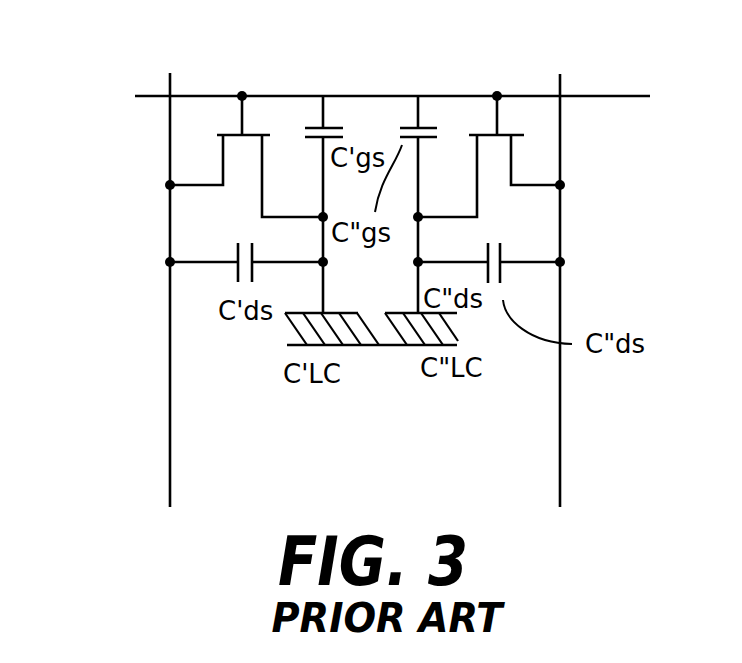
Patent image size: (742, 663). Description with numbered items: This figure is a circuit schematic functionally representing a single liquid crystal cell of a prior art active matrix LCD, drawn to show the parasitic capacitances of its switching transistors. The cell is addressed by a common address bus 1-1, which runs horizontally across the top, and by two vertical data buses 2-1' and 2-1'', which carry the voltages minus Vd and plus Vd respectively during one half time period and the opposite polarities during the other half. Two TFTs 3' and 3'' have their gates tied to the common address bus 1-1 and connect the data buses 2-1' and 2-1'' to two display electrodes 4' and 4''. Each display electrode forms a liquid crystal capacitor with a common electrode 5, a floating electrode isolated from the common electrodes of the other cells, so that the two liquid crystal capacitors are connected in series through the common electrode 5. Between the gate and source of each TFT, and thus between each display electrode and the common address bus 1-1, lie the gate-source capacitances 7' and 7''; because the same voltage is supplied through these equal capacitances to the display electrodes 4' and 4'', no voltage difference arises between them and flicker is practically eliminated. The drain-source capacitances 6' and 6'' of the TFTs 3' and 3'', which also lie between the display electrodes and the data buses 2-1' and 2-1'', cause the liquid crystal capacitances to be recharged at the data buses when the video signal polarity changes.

The common address bus 1-1 is at (370, 99).
The data bus 2-1' is at (178, 256).
The data bus 2-1'' is at (561, 257).
The TFT 3' is at (246, 131).
The TFT 3'' is at (489, 129).
The gate-source capacitance C'gs 7' is at (338, 173).
The gate-source capacitance C''gs 7'' is at (411, 173).
The drain-source capacitance C'ds 6' is at (223, 281).
The drain-source capacitance C''ds 6'' is at (522, 282).
The display electrode 4' is at (283, 339).
The display electrode 4'' is at (505, 358).
The common electrode 5 is at (291, 341).